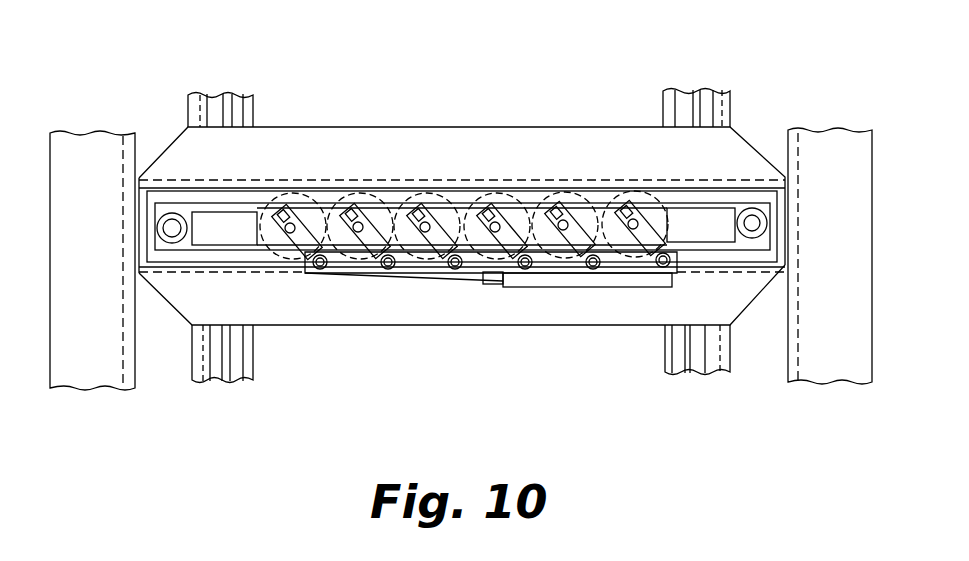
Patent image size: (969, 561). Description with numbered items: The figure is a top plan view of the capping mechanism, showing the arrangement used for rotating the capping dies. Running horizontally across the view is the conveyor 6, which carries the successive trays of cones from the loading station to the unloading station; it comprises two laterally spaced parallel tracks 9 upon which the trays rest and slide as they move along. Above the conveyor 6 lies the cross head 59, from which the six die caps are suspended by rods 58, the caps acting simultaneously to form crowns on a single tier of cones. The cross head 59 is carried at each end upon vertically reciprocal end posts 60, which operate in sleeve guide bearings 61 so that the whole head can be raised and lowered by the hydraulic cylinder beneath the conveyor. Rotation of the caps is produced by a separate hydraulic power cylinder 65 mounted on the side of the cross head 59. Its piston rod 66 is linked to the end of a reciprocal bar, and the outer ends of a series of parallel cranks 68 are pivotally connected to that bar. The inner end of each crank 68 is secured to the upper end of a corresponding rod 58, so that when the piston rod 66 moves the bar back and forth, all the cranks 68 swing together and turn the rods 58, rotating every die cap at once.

The conveyor 6 is at (233, 86).
The tracks 9 is at (232, 98).
The rods 58 is at (292, 224).
The cross head 59 is at (365, 308).
The end posts 60 is at (158, 224).
The sleeve guide bearings 61 is at (148, 235).
The hydraulic power cylinder 65 is at (583, 287).
The piston rod 66 is at (490, 284).
The cranks 68 is at (400, 220).